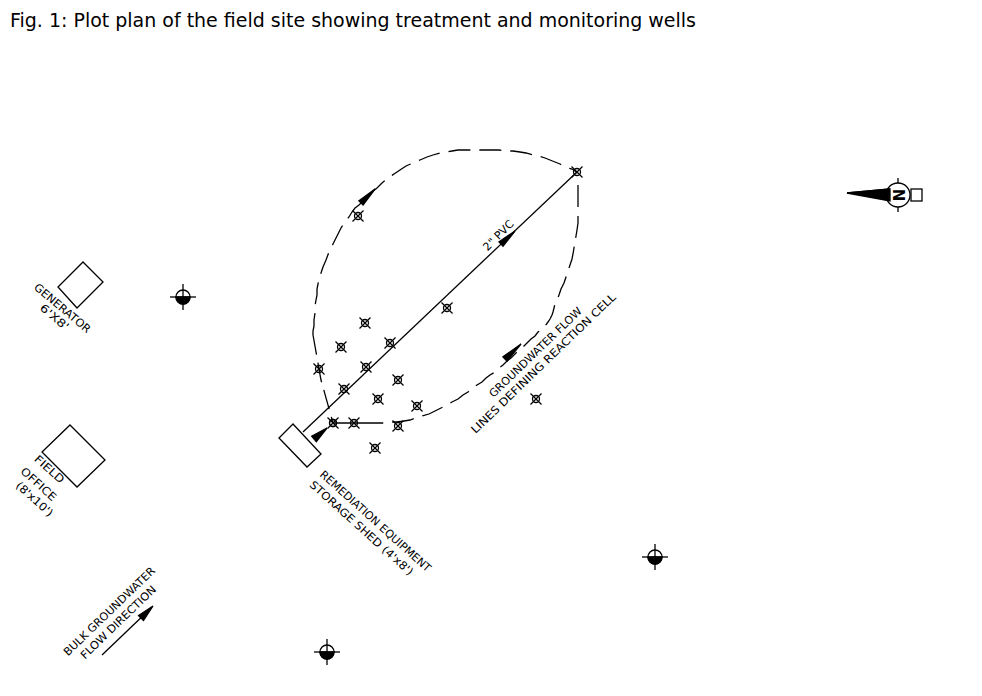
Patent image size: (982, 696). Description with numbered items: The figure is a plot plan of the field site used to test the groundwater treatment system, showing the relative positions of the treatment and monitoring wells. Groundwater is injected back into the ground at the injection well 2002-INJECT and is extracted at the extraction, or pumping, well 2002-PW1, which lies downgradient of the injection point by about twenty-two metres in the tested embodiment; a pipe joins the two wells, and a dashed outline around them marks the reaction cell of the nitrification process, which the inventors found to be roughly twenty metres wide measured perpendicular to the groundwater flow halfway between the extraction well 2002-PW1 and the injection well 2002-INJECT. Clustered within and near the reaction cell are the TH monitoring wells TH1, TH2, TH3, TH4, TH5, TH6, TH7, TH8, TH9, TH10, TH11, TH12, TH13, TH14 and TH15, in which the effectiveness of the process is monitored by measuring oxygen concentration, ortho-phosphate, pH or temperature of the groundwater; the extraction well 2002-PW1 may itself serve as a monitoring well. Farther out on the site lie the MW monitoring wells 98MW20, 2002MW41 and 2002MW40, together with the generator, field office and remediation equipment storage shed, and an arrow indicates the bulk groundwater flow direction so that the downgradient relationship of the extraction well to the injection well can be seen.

The extraction well 2002-PW1 is at (609, 172).
The injection well 2002-INJECT is at (331, 418).
The monitoring well TH1 is at (307, 371).
The monitoring well TH2 is at (331, 389).
The monitoring well TH3 is at (347, 417).
The monitoring well TH4 is at (389, 448).
The monitoring well TH5 is at (329, 347).
The monitoring well TH6 is at (363, 360).
The monitoring well TH7 is at (377, 392).
The monitoring well TH8 is at (412, 428).
The monitoring well TH9 is at (379, 323).
The monitoring well TH10 is at (407, 343).
The monitoring well TH11 is at (417, 380).
The monitoring well TH12 is at (435, 406).
The monitoring well TH13 is at (353, 215).
The monitoring well TH14 is at (465, 308).
The monitoring well TH15 is at (554, 399).
The monitoring well 98MW20 is at (184, 306).
The monitoring well 2002MW41 is at (657, 566).
The monitoring well 2002MW40 is at (328, 663).